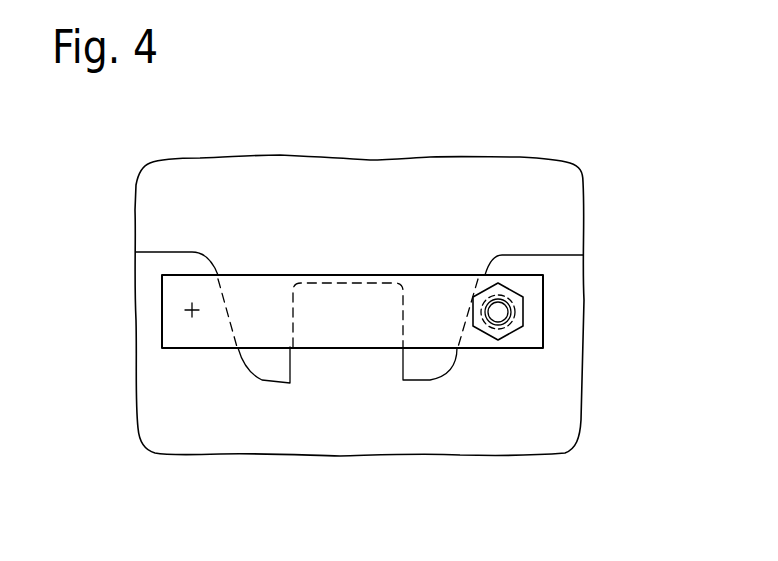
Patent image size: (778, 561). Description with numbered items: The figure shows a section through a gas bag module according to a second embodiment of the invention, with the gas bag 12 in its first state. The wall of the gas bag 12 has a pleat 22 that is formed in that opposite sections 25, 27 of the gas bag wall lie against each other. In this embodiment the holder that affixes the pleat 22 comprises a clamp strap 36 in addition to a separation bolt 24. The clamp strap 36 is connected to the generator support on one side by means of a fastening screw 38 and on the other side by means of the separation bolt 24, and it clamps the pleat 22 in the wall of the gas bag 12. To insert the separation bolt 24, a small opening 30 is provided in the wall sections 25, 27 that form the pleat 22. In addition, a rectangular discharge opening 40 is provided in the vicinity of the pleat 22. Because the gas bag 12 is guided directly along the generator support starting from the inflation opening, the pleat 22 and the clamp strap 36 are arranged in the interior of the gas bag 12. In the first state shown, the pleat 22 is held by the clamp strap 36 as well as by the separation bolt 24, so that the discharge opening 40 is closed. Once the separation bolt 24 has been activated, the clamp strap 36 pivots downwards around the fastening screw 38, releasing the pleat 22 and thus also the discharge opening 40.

The gas bag 12 is at (185, 432).
The pleat 22 is at (442, 378).
The separation bolt 24 is at (524, 292).
The section of the gas bag wall 25 is at (280, 373).
The section of the gas bag wall 27 is at (377, 367).
The opening 30 is at (512, 328).
The clamp strap 36 is at (252, 335).
The fastening screw 38 is at (188, 310).
The discharge opening 40 is at (335, 368).